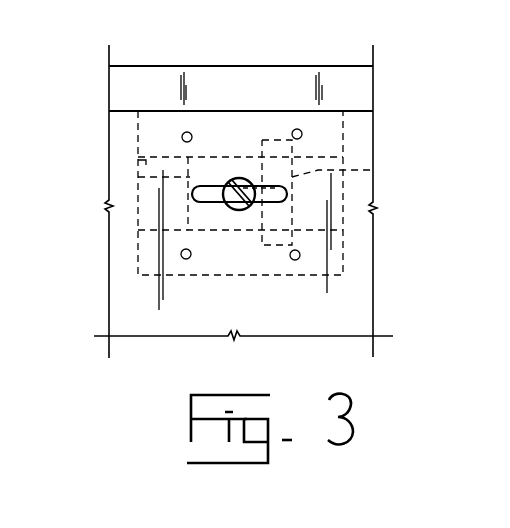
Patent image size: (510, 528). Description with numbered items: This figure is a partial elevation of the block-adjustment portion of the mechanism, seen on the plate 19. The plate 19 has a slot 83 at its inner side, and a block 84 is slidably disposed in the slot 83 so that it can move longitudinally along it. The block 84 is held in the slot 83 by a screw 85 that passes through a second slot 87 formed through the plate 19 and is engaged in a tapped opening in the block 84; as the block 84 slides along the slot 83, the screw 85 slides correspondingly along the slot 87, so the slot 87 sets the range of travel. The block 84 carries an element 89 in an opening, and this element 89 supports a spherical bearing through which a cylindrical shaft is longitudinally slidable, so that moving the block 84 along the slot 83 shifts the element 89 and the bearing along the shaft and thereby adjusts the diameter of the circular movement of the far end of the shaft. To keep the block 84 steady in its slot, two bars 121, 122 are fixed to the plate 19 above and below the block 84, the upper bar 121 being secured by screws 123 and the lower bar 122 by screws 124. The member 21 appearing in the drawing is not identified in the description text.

The housing wall 21 is at (373, 90).
The bar 121 is at (343, 131).
The bar 122 is at (343, 256).
The slot 83 is at (138, 160).
The block 84 is at (138, 177).
The element 89 is at (337, 192).
The screws 123 is at (292, 133).
The screws 124 is at (183, 259).
The screw 85 is at (237, 211).
The slot 87 is at (213, 201).
The plate 19 is at (290, 316).